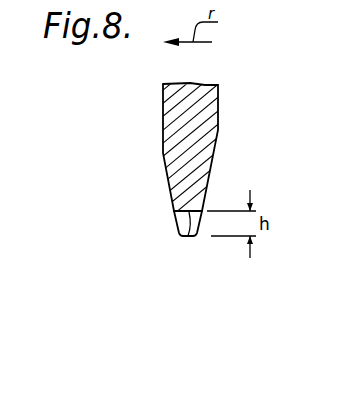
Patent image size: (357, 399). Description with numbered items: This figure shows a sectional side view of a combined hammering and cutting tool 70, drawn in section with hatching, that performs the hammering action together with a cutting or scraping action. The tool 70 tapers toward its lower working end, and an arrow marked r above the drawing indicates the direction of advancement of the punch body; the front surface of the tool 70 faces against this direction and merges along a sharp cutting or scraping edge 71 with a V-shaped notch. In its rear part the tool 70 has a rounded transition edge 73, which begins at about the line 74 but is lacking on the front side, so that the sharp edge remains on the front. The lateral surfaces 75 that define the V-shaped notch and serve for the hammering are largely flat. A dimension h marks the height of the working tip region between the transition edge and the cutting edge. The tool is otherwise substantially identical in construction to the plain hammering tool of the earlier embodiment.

The tool 70 is at (218, 142).
The cutting or scraping edge 71 is at (199, 222).
The rounded transition edge 73 is at (174, 212).
The line 74 is at (177, 224).
The lateral surfaces 75 is at (188, 237).